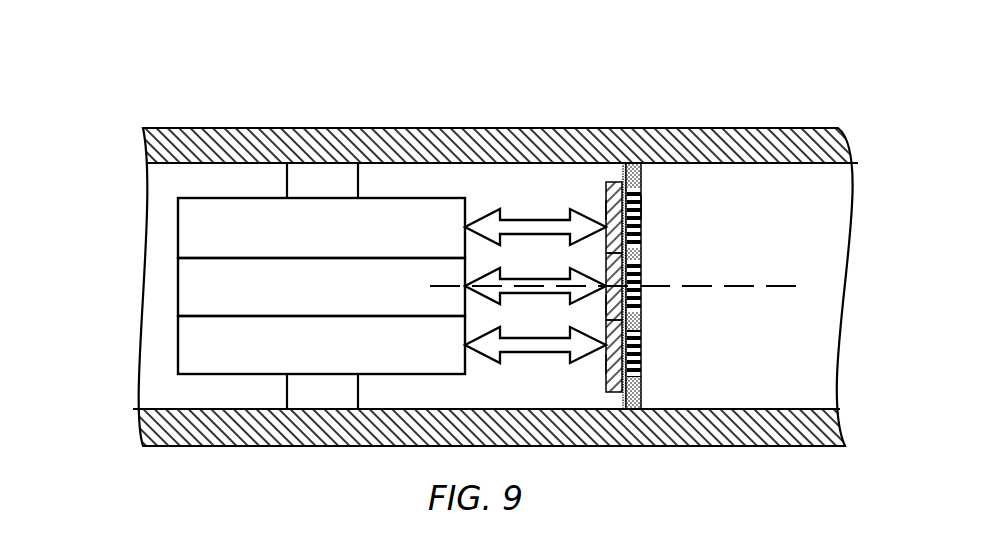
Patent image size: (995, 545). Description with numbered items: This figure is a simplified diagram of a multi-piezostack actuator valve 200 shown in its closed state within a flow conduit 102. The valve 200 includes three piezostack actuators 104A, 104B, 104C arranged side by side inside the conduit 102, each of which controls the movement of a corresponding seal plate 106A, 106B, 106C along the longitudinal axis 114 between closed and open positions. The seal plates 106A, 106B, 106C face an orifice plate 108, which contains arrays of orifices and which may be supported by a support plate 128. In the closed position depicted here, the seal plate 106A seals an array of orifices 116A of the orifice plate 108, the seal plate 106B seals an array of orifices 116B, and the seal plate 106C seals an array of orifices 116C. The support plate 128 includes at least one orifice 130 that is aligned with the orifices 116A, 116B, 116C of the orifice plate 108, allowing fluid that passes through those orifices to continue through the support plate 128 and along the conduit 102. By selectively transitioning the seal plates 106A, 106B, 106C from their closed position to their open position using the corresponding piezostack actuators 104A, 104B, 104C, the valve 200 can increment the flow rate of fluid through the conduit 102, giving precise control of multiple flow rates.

The multi-piezostack actuator valve 200 is at (195, 64).
The flow conduit 102 is at (757, 128).
The piezostack actuator 104A is at (183, 232).
The piezostack actuator 104B is at (188, 287).
The piezostack actuator 104C is at (183, 330).
The seal plate 106A is at (606, 187).
The seal plate 106B is at (606, 264).
The seal plate 106C is at (606, 389).
The orifice plate 108 is at (659, 234).
The longitudinal axis 114 is at (755, 286).
The array of orifices 116A is at (597, 209).
The array of orifices 116B is at (597, 306).
The array of orifices 116C is at (597, 365).
The support plate 128 is at (643, 259).
The orifice 130 is at (653, 207).